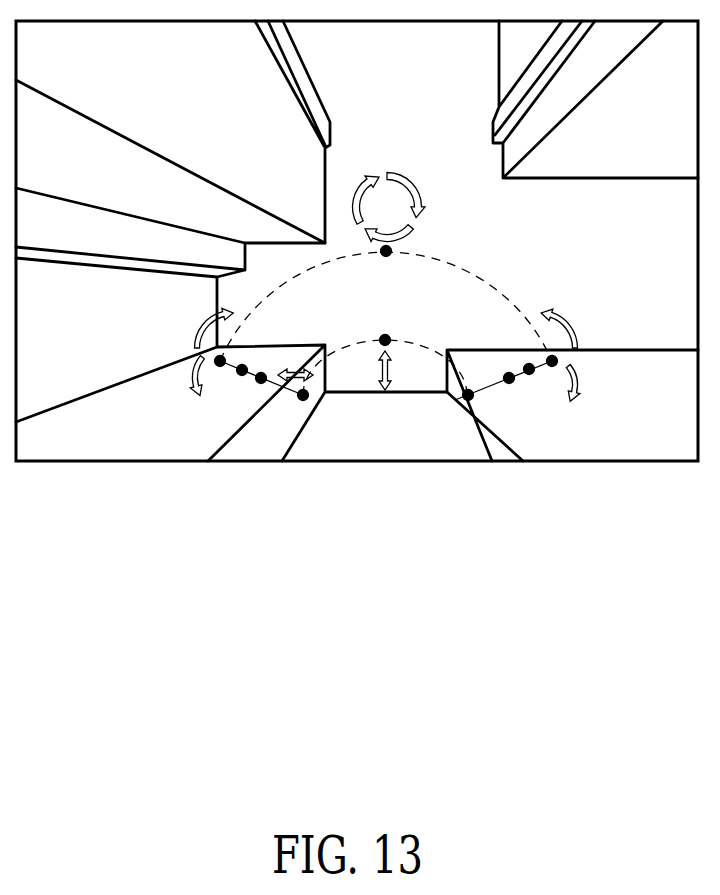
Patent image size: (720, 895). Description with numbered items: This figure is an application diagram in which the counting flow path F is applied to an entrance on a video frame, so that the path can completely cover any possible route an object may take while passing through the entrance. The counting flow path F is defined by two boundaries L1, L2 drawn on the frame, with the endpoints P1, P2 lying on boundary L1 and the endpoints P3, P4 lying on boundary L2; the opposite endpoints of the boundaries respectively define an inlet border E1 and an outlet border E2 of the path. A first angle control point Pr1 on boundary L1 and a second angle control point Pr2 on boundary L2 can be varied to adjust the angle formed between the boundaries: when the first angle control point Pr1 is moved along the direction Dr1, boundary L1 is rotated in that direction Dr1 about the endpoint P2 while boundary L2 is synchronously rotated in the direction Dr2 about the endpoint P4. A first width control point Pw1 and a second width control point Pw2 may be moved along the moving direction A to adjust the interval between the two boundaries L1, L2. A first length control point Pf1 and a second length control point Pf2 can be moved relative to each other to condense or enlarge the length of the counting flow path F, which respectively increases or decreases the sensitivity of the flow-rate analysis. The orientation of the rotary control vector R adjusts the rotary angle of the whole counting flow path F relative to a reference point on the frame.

The endpoint P1 is at (213, 357).
The endpoint P2 is at (301, 397).
The endpoint P3 is at (556, 360).
The endpoint P4 is at (464, 399).
The first angle control point Pr1 is at (240, 375).
The second angle control point Pr2 is at (532, 374).
The first width control point Pw1 is at (262, 373).
The second width control point Pw2 is at (508, 374).
The first length control point Pf1 is at (389, 269).
The second length control point Pf2 is at (389, 327).
The boundary L1 is at (283, 387).
The boundary L2 is at (491, 388).
The inlet border E1 is at (343, 352).
The outlet border E2 is at (481, 277).
The counting flow path F is at (451, 313).
The moving direction A is at (300, 371).
The rotary control vector R is at (389, 207).
The direction Dr1 is at (378, 350).
The direction Dr2 is at (404, 350).